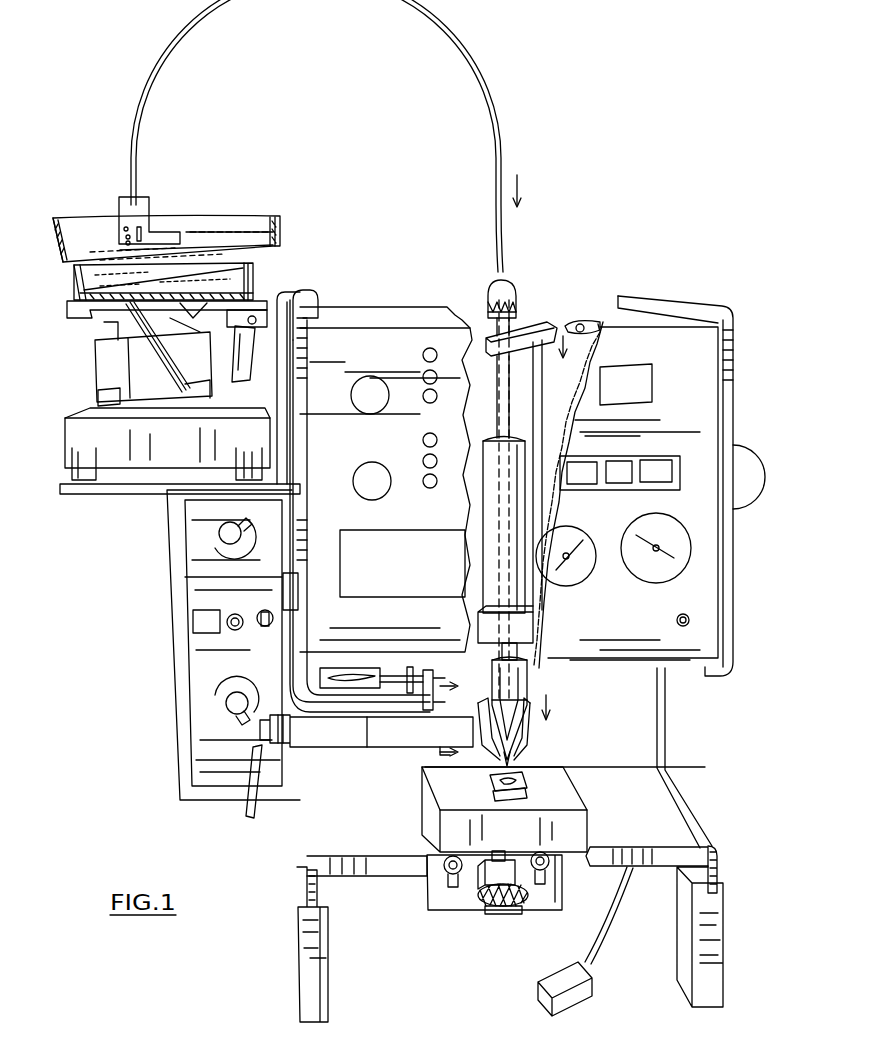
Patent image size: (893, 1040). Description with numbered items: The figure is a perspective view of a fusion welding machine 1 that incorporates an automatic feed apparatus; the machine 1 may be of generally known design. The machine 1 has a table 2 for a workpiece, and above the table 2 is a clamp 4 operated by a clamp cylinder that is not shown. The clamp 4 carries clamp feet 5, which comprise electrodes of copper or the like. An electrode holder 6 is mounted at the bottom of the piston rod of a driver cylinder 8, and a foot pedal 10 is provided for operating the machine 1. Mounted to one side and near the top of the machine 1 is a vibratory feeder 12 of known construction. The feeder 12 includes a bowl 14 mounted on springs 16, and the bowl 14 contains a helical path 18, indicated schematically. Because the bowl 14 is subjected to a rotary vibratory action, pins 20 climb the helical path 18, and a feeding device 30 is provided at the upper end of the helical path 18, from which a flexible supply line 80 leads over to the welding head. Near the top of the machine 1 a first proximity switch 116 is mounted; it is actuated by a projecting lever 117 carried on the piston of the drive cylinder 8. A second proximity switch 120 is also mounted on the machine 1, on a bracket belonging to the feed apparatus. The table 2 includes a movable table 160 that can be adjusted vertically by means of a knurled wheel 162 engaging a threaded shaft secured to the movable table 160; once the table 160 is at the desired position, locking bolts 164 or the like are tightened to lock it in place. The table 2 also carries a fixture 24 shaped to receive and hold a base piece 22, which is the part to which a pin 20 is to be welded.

The fusion welding machine 1 is at (748, 557).
The table 2 is at (668, 796).
The clamp 4 is at (522, 724).
The clamp feet 5 is at (514, 768).
The electrode holder 6 is at (530, 722).
The driver cylinder 8 is at (525, 462).
The foot pedal 10 is at (587, 979).
The vibratory feeder 12 is at (65, 426).
The bowl 14 is at (66, 264).
The springs 16 is at (95, 360).
The helical path 18 is at (250, 232).
The pins 20 is at (185, 236).
The base piece 22 is at (492, 789).
The fixture 24 is at (521, 800).
The feeding device 30 is at (124, 196).
The feed hose 80 is at (483, 102).
The first proximity switch 116 is at (586, 322).
The projecting lever 117 is at (523, 330).
The second proximity switch 120 is at (357, 668).
The movable table 160 is at (455, 830).
The knurled wheel 162 is at (490, 913).
The locking bolts 164 is at (447, 867).